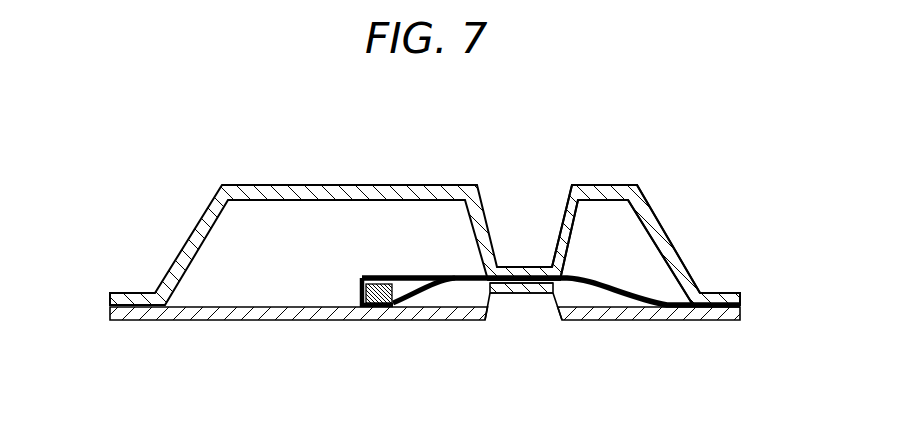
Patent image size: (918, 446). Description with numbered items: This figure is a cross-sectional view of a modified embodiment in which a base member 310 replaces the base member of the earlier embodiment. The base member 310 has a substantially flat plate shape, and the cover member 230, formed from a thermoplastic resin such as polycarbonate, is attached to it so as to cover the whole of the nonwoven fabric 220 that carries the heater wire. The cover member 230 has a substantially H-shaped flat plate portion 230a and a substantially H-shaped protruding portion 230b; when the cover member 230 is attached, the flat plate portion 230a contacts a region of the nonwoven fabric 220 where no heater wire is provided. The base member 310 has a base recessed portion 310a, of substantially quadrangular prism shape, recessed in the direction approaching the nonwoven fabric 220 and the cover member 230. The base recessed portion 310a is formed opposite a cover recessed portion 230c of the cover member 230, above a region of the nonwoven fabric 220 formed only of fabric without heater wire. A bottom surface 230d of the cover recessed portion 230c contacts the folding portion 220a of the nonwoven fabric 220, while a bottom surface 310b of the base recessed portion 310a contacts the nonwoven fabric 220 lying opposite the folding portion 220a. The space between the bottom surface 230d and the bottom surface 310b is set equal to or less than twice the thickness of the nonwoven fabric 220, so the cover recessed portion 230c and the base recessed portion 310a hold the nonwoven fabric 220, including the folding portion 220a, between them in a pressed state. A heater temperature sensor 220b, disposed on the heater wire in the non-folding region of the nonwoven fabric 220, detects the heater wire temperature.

The nonwoven fabric 220 is at (625, 288).
The folding portion 220a is at (425, 277).
The heater temperature sensor 220b is at (383, 302).
The cover member 230 is at (408, 186).
The flat plate portion 230a is at (143, 292).
The protruding portion 230b is at (267, 186).
The cover recessed portion 230c is at (564, 212).
The bottom surface of the cover recessed portion 230d is at (575, 272).
The base member 310 is at (570, 316).
The base recessed portion 310a is at (552, 303).
The bottom surface of the base recessed portion 310b is at (526, 258).